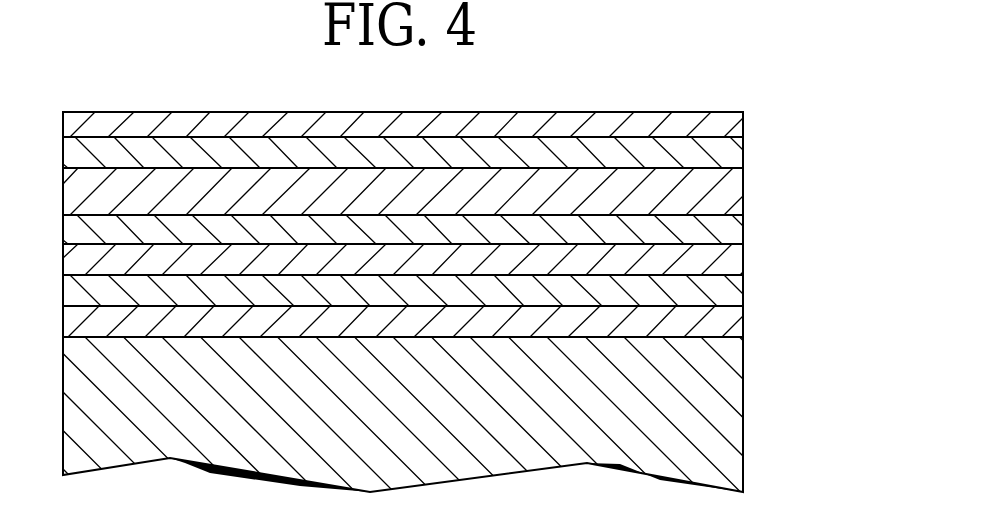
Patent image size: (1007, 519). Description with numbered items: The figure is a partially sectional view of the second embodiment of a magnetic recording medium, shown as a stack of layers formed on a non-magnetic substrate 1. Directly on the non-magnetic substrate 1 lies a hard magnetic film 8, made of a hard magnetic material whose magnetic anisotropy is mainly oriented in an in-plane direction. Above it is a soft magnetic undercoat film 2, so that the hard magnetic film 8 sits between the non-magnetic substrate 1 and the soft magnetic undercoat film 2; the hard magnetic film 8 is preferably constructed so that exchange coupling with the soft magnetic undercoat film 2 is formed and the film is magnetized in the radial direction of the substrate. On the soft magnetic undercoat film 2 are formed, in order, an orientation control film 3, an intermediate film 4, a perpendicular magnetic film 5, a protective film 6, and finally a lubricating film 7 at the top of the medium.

The non-magnetic substrate 1 is at (745, 365).
The hard magnetic film 8 is at (745, 327).
The soft magnetic undercoat film 2 is at (745, 285).
The orientation control film 3 is at (745, 257).
The intermediate film 4 is at (745, 223).
The perpendicular magnetic film 5 is at (745, 185).
The protective film 6 is at (745, 155).
The lubricating film 7 is at (745, 120).